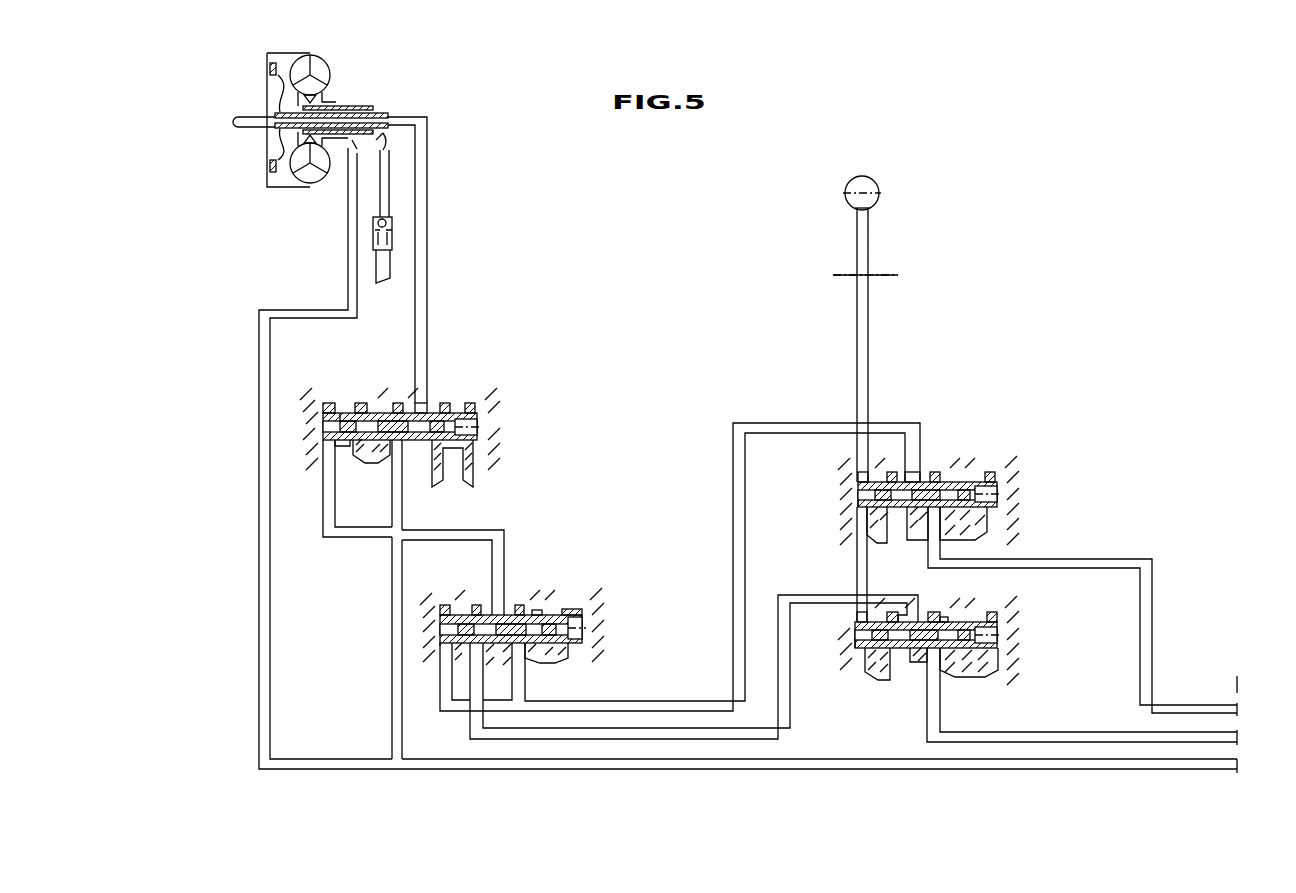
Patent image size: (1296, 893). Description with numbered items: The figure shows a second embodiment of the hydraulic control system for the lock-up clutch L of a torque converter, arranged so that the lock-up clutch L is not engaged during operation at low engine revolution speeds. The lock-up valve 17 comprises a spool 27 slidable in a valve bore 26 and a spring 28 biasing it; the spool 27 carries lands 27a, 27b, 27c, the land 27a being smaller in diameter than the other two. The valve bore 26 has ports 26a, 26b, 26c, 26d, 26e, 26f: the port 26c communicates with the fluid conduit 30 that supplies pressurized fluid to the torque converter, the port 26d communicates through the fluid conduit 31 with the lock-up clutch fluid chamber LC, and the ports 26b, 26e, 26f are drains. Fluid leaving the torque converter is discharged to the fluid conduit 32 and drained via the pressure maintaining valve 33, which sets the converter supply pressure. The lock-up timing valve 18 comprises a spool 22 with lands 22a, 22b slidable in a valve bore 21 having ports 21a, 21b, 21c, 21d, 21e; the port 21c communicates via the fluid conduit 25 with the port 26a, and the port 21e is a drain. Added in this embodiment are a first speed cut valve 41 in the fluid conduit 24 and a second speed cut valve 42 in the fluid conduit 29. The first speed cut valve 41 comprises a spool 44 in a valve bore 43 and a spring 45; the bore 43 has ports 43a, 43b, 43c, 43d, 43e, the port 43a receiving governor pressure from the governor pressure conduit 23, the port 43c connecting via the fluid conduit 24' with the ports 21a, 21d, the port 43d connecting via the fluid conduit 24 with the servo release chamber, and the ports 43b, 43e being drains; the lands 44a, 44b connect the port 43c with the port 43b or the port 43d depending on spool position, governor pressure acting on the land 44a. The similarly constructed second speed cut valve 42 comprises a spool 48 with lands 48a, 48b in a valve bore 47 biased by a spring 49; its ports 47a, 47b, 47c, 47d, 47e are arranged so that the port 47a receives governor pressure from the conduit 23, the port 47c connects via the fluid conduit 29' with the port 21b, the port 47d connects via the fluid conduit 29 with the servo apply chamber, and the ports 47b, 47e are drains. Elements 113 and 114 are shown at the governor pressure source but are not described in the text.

The lock-up clutch L is at (300, 55).
The lock-up clutch fluid chamber LC is at (275, 106).
The lock-up valve 17 is at (480, 387).
The lock-up timing valve 18 is at (562, 574).
The valve bore 21 is at (447, 626).
The port 21a is at (444, 606).
The port 21b is at (476, 606).
The port 21c is at (518, 606).
The port 21d is at (520, 611).
The port 21e is at (586, 615).
The spool 22 is at (507, 650).
The land 22a is at (460, 652).
The land 22b is at (548, 655).
The governor pressure conduit 23 is at (573, 606).
The fluid conduit 24 is at (1082, 610).
The fluid conduit 24' is at (680, 567).
The fluid conduit 25 is at (450, 531).
The valve bore 26 is at (340, 434).
The port 26a is at (330, 404).
The port 26b is at (361, 404).
The port 26c is at (398, 404).
The port 26d is at (425, 404).
The port 26e is at (462, 404).
The port 26f is at (478, 410).
The spool 27 is at (355, 410).
The land 27a is at (351, 446).
The land 27b is at (372, 455).
The land 27c is at (450, 455).
The spring 28 is at (480, 427).
The fluid conduit 29 is at (1082, 695).
The fluid conduit 29' is at (694, 667).
The fluid conduit 30 is at (805, 762).
The fluid conduit 31 is at (427, 305).
The fluid conduit 32 is at (392, 186).
The pressure maintaining valve 33 is at (406, 241).
The first speed cut valve 41 is at (1020, 467).
The second speed cut valve 42 is at (1022, 617).
The valve bore 43 is at (860, 499).
The port 43a is at (862, 474).
The port 43b is at (893, 473).
The port 43c is at (914, 473).
The port 43d is at (936, 473).
The port 43e is at (991, 473).
The spool 44 is at (920, 510).
The land 44a is at (882, 520).
The land 44b is at (958, 522).
The spring 45 is at (1000, 494).
The valve bore 47 is at (858, 640).
The port 47a is at (857, 615).
The port 47b is at (893, 613).
The port 47c is at (934, 613).
The port 47d is at (944, 618).
The port 47e is at (993, 613).
The spool 48 is at (920, 656).
The land 48a is at (878, 660).
The land 48b is at (960, 660).
The spring 49 is at (1000, 637).
The line pressure source 113 is at (848, 208).
The oil pump 114 is at (850, 180).